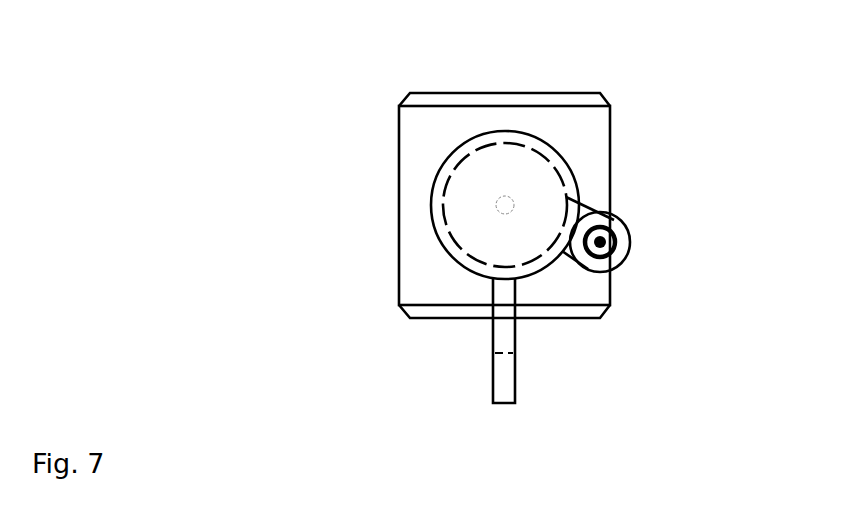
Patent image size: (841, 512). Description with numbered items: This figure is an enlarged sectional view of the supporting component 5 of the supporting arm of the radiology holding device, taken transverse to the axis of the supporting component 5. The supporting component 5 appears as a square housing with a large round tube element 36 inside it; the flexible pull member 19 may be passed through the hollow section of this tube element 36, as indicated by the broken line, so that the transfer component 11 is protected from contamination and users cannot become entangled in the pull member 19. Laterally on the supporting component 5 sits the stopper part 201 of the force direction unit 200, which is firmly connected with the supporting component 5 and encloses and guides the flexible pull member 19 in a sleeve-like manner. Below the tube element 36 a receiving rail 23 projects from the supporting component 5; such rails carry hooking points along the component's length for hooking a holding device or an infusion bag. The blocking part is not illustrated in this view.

The supporting component 5 is at (585, 132).
The tube element 36 is at (483, 142).
The flexible pull member 19 is at (496, 206).
The transfer component 11 is at (603, 239).
The stopper part 201 is at (617, 252).
The receiving rail 23 is at (498, 372).
The force direction unit 200 is at (590, 282).